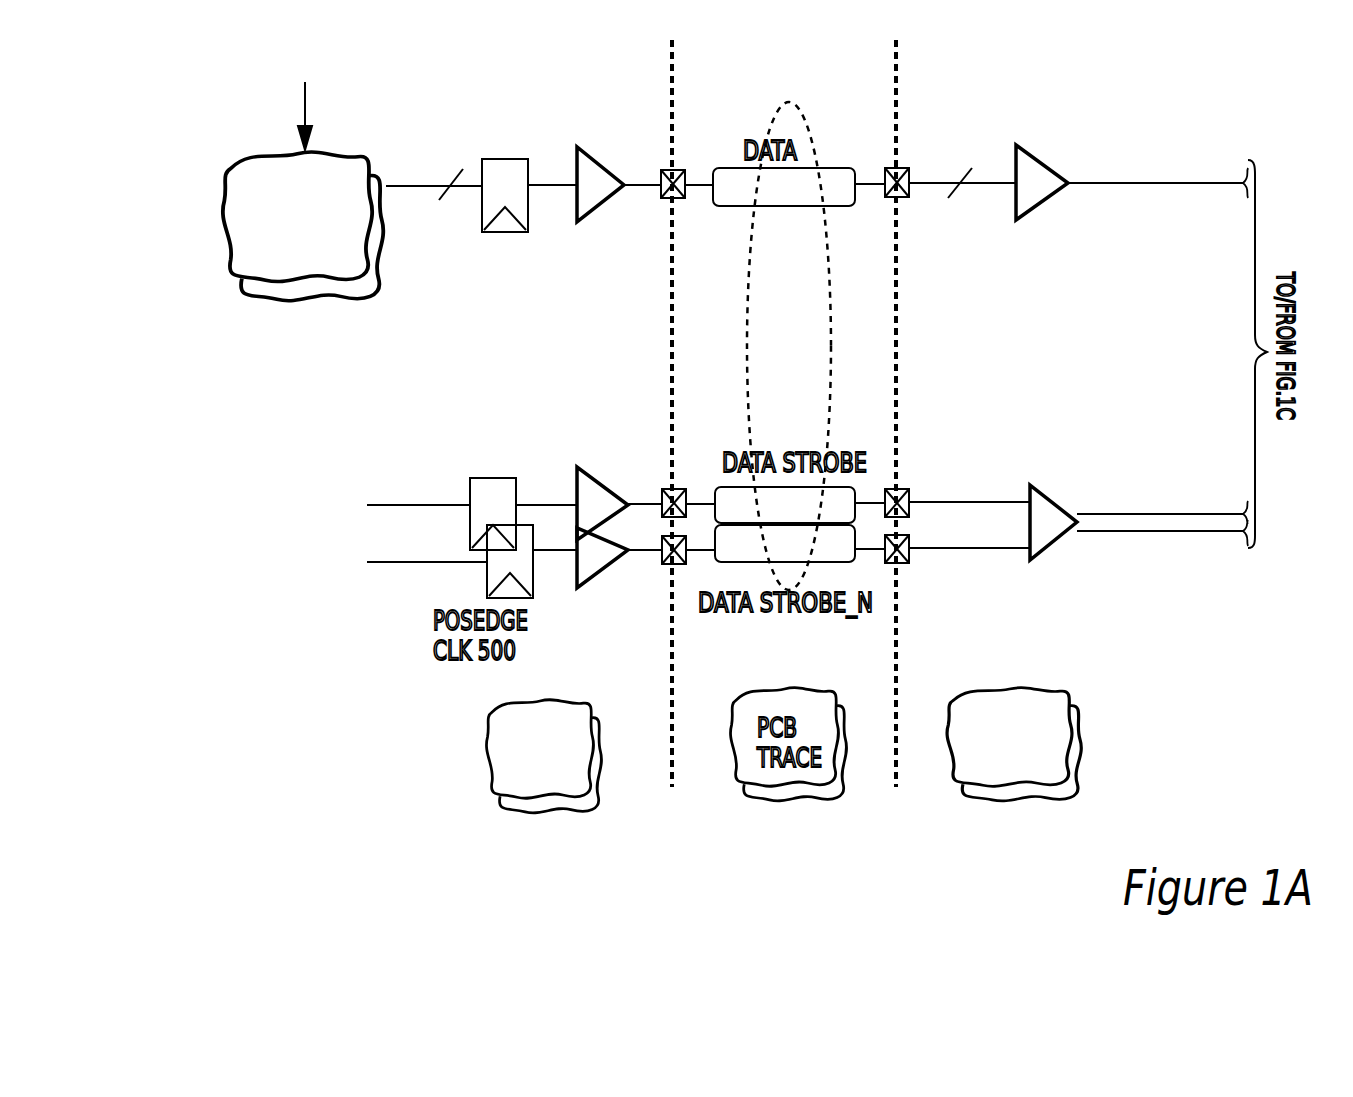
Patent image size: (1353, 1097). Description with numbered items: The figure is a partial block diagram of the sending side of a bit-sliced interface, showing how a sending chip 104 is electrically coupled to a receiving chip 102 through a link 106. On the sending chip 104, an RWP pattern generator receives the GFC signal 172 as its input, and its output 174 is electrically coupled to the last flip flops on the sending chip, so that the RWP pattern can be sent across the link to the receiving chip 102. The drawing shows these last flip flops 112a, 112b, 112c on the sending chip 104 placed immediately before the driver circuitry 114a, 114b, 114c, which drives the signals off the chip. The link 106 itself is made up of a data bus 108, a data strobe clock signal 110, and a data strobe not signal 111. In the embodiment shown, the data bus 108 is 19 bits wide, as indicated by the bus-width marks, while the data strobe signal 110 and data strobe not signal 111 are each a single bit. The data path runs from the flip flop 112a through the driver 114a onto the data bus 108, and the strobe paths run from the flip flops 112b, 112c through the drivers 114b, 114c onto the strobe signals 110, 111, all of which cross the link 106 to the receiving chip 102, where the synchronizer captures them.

The sending chip 104 is at (238, 170).
The GFC signal 172 is at (307, 109).
The output of the RWP pattern generator 174 is at (432, 187).
The bits 19 is at (710, 168).
The last flip flop 112a is at (510, 159).
The driver circuitry 114a is at (597, 211).
The link 106 is at (800, 118).
The data bus 108 is at (813, 201).
The data strobe (DS) clock signal 110 is at (843, 500).
The data strobe not (DS_N) signal 111 is at (838, 548).
The last flip flop 112b is at (485, 478).
The driver circuitry 114b is at (600, 480).
The last flip flop 112c is at (487, 573).
The driver circuitry 114c is at (597, 578).
The receiving chip 102 is at (1074, 704).